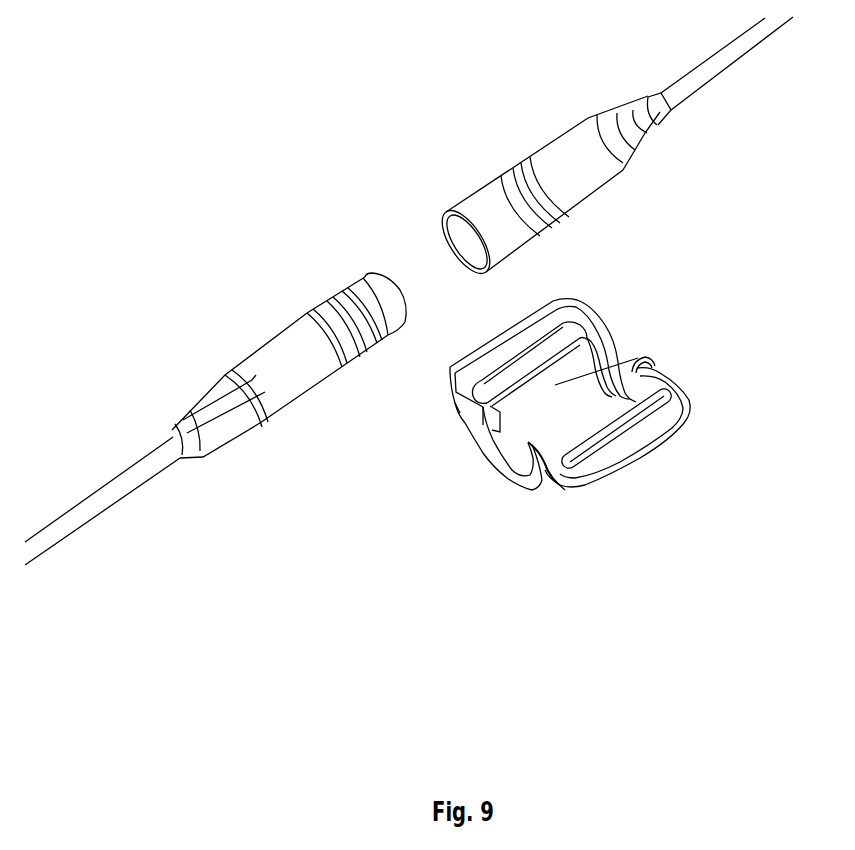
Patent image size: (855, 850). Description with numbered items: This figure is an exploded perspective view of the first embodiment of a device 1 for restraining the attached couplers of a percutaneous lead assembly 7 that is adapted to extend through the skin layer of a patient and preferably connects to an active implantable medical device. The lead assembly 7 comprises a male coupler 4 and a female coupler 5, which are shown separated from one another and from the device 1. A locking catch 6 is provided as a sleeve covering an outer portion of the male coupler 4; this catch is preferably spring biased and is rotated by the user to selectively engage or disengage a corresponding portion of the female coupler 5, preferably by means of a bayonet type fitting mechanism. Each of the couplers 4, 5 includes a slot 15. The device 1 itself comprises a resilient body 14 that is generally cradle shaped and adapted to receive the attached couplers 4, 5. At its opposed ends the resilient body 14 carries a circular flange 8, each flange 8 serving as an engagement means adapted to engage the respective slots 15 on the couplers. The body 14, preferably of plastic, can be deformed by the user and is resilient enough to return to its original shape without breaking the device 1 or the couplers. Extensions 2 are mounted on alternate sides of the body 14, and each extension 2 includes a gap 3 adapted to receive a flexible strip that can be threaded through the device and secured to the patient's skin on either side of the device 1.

The device 1 is at (622, 487).
The extension 2 is at (603, 463).
The gap 3 is at (658, 413).
The male coupler 4 is at (602, 189).
The female coupler 5 is at (215, 485).
The locking catch 6 is at (487, 215).
The percutaneous lead assembly 7 is at (662, 118).
The circular flange 8 is at (505, 425).
The resilient body 14 is at (547, 490).
The slot 15 is at (331, 340).